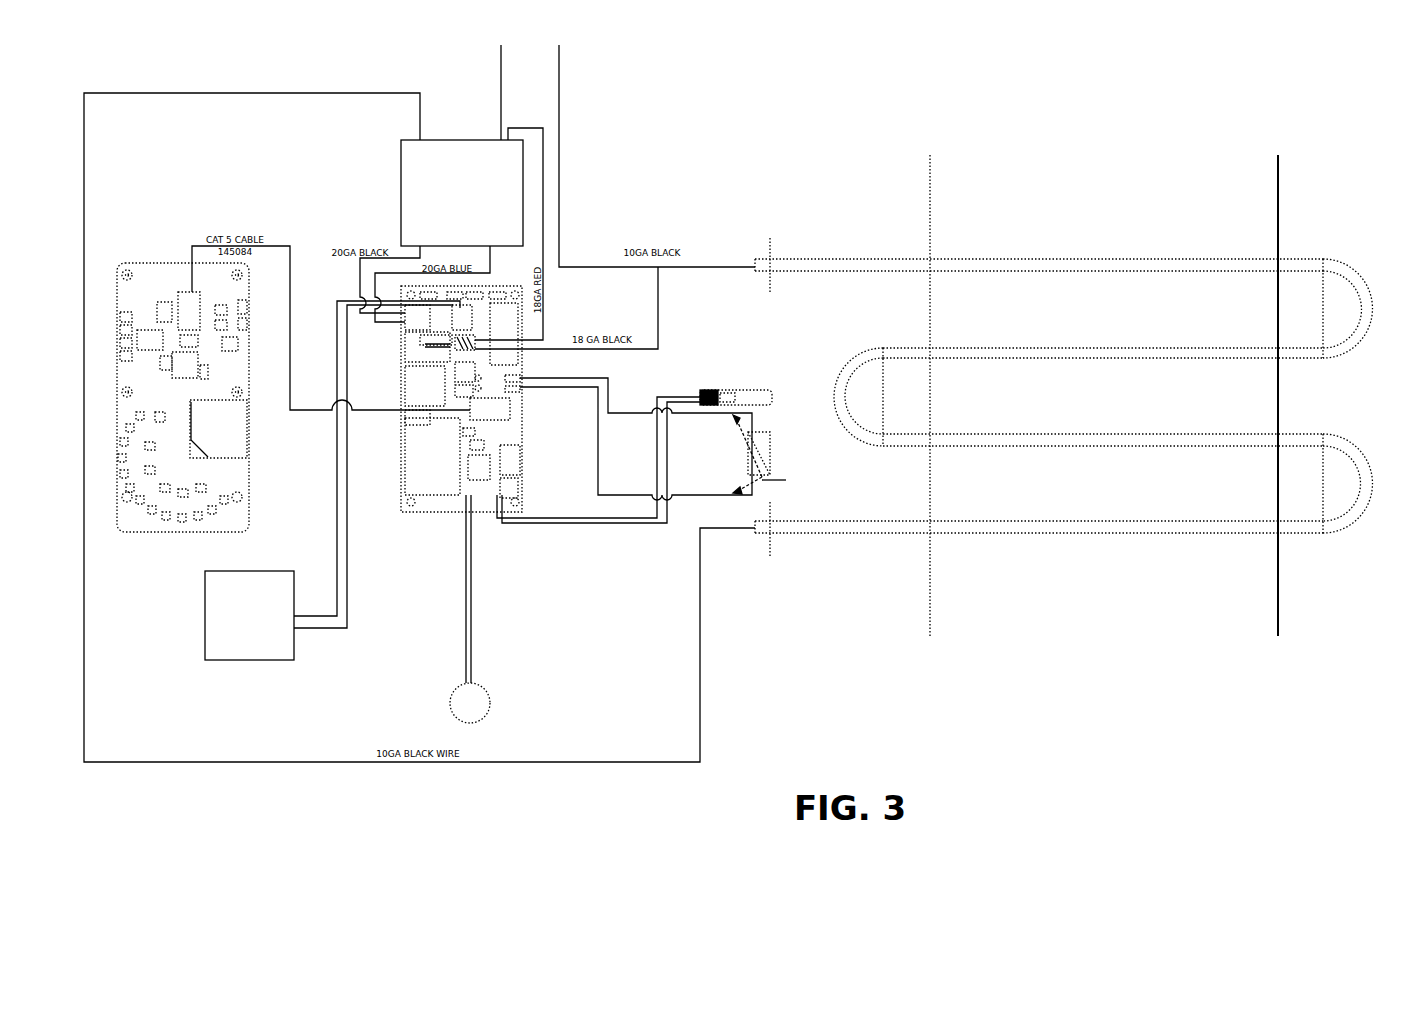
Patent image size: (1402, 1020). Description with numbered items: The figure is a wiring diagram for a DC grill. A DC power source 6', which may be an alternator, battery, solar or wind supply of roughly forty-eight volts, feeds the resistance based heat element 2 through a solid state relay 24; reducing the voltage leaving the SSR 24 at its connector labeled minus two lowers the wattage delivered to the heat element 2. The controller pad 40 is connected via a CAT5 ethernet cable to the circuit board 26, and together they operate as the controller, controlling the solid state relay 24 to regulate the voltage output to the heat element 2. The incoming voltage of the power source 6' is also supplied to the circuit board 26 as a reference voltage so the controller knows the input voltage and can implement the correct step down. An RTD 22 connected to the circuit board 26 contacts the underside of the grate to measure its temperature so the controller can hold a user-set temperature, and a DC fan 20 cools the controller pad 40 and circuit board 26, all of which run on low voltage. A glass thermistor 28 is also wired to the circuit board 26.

The heat element 2 is at (890, 258).
The DC power source 6' is at (620, 156).
The DC fan 20 is at (235, 660).
The RTD 22 is at (745, 385).
The solid state relay 24 is at (401, 160).
The circuit board 26 is at (442, 510).
The glass thermistor 28 is at (448, 708).
The controller pad 40 is at (125, 534).